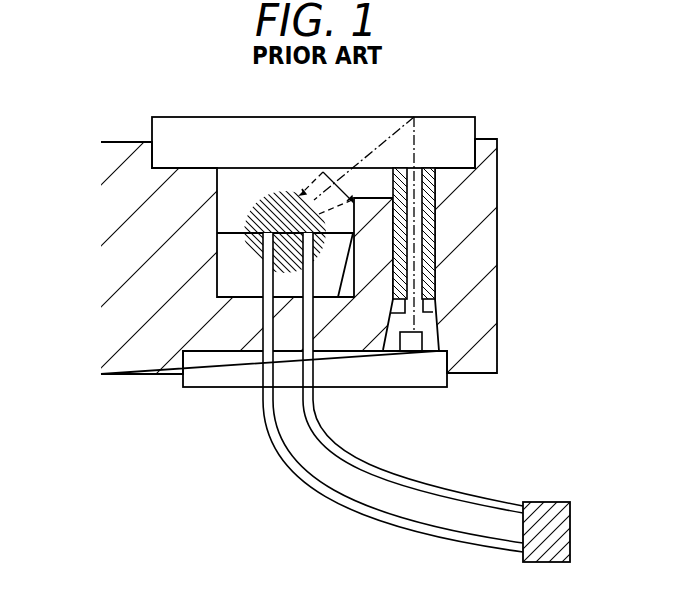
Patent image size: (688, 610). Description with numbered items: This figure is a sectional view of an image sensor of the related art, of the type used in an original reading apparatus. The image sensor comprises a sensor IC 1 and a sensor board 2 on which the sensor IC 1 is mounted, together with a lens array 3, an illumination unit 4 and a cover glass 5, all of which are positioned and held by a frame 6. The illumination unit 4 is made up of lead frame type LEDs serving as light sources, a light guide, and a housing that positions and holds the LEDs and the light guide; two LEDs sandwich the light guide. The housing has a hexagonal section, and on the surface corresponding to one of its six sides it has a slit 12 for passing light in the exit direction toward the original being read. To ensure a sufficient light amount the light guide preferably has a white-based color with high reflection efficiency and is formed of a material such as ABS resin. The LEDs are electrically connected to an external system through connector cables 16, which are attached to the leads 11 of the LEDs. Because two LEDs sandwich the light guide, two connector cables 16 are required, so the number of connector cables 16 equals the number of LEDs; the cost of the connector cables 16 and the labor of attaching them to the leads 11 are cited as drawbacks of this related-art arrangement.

The sensor IC 1 is at (422, 339).
The sensor board 2 is at (418, 373).
The lens array 3 is at (435, 187).
The illumination unit 4 is at (245, 182).
The cover glass 5 is at (188, 133).
The frame 6 is at (115, 192).
The leads 11 is at (310, 363).
The slit 12 is at (318, 200).
The connector cables 16 is at (320, 488).